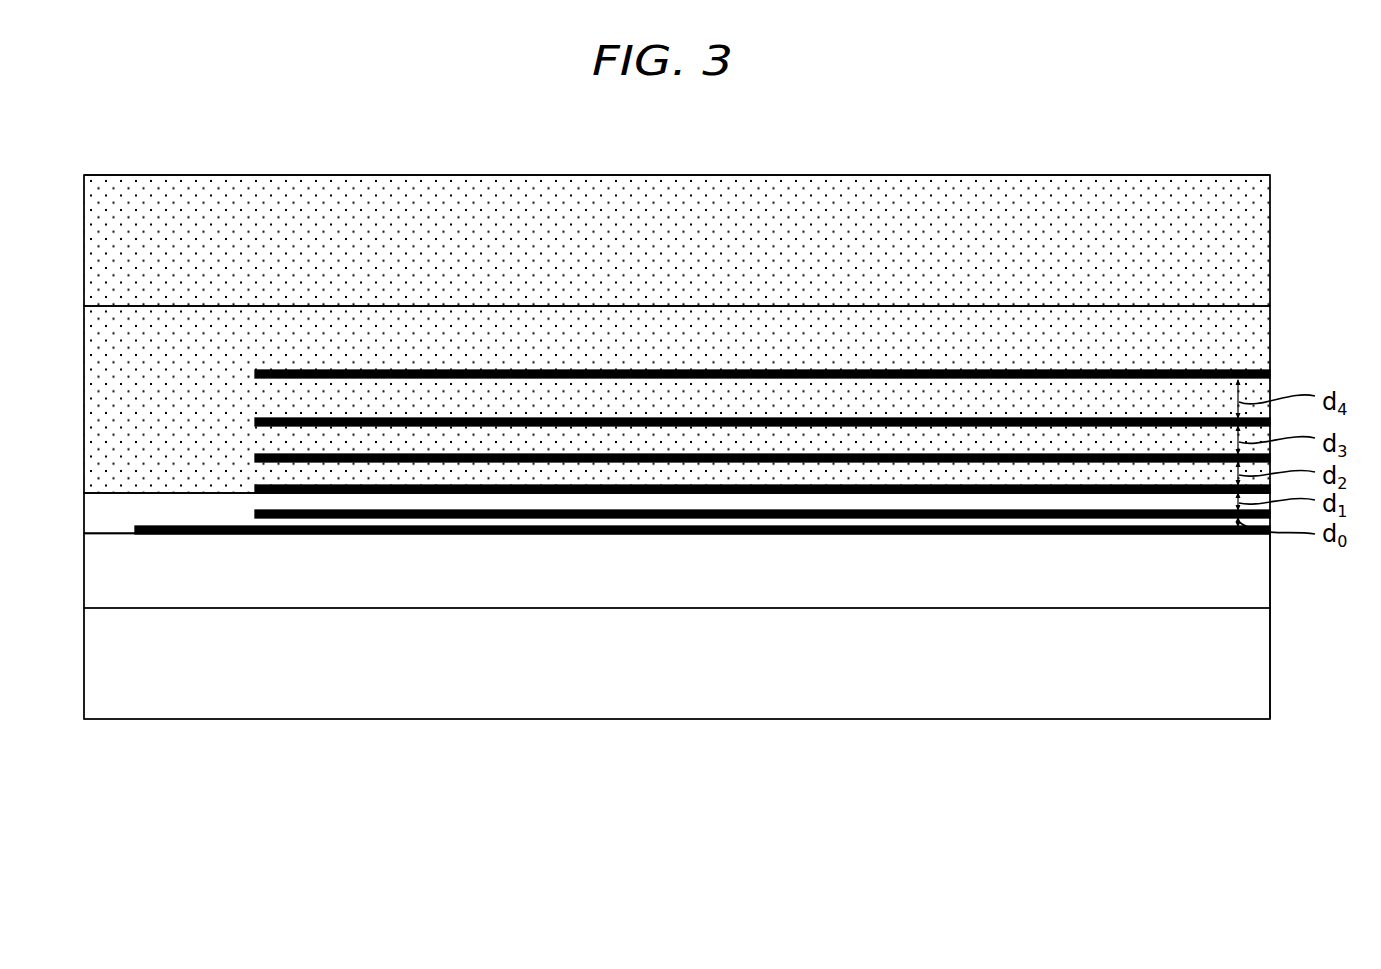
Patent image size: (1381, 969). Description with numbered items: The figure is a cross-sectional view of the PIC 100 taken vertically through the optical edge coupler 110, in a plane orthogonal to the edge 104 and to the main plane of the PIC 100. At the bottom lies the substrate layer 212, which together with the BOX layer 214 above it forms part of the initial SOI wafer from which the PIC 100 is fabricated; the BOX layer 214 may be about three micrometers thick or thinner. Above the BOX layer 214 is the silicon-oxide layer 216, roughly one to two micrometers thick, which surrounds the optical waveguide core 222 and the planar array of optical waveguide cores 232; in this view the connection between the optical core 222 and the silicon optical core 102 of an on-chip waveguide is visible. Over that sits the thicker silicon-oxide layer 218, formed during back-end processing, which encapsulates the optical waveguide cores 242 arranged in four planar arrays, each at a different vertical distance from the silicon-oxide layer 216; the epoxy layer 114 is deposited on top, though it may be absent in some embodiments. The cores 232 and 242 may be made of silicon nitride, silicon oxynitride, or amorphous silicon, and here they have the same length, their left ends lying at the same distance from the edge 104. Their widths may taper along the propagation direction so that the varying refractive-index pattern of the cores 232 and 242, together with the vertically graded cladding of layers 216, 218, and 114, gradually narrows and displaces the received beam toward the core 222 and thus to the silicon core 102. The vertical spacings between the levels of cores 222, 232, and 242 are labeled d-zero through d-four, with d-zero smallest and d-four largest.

The PIC 100 is at (683, 124).
The optical edge coupler 110 is at (888, 147).
The epoxy layer 114 is at (90, 243).
The silicon-oxide layer 218 is at (90, 400).
The silicon-oxide layer 216 is at (90, 511).
The optical waveguide cores 242 is at (508, 370).
The optical waveguide cores 232 is at (550, 519).
The optical waveguide core 222 is at (782, 536).
The optical core 102 is at (176, 537).
The BOX layer 214 is at (90, 568).
The substrate layer 212 is at (90, 664).
The edge 104 is at (1283, 587).